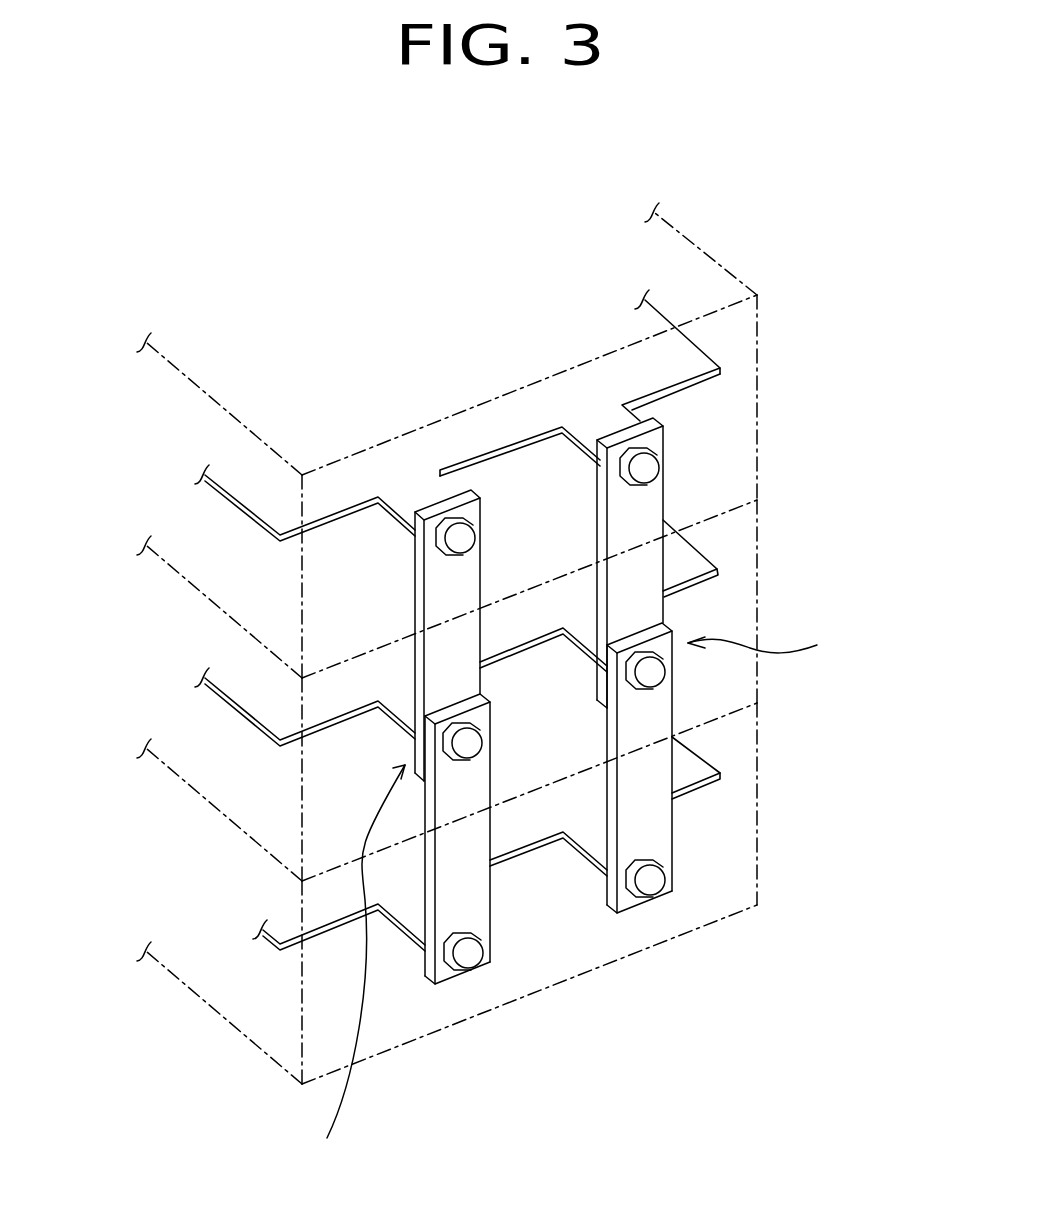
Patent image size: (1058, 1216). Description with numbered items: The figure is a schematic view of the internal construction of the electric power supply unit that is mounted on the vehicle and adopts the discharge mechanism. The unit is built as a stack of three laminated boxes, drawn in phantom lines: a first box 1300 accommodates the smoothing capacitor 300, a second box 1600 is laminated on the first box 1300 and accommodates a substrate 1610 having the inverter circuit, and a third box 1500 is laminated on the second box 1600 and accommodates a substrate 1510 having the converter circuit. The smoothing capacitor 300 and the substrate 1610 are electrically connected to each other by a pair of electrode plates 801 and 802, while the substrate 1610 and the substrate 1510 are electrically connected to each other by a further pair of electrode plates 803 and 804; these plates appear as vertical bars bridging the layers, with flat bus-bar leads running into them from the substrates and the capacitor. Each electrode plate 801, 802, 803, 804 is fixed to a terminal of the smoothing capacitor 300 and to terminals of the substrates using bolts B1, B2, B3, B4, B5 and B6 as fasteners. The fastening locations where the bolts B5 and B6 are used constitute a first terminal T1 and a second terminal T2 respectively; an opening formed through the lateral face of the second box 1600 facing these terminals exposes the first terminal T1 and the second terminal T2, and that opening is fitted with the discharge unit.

The third box 1500 is at (737, 405).
The second box 1600 is at (737, 602).
The first box 1300 is at (737, 800).
The substrate 1510 is at (683, 352).
The substrate 1610 is at (697, 548).
The smoothing capacitor 300 is at (688, 758).
The electrode plate 801 is at (472, 905).
The electrode plate 802 is at (652, 837).
The electrode plate 803 is at (465, 590).
The electrode plate 804 is at (648, 519).
The bolt B1 is at (468, 955).
The bolt B2 is at (650, 880).
The bolt B3 is at (460, 540).
The bolt B4 is at (644, 468).
The bolt B5 is at (467, 745).
The bolt B6 is at (650, 672).
The first terminal T1 is at (354, 970).
The second terminal T2 is at (772, 645).